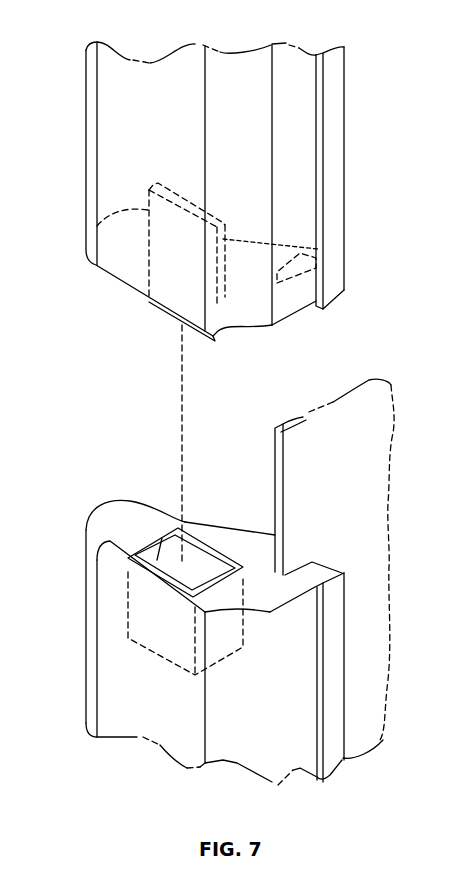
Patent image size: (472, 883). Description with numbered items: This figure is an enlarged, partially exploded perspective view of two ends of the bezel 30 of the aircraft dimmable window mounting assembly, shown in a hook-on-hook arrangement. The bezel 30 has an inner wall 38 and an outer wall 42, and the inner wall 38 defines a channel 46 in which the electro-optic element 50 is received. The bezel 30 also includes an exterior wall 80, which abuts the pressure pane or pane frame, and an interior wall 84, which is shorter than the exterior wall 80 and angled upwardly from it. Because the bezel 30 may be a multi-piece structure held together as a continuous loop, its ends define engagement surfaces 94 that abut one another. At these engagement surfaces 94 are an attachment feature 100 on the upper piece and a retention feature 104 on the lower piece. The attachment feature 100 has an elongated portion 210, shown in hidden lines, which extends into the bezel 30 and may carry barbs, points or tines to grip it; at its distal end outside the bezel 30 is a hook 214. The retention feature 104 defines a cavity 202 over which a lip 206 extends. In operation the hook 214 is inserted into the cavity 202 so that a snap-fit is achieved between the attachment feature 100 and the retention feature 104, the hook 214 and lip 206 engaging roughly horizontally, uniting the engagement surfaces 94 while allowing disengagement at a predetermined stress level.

The bezel 30 is at (84, 152).
The outer wall 42 is at (133, 105).
The exterior wall 80 is at (291, 123).
The engagement surfaces 94 is at (294, 313).
The inner wall 38 is at (242, 238).
The channel 46 is at (295, 255).
The interior wall 84 is at (80, 208).
The elongated portion 210 is at (148, 252).
The attachment feature 100 is at (160, 312).
The hook 214 is at (230, 328).
The electro-optic element 50 is at (371, 451).
The lip 206 is at (202, 573).
The retention feature 104 is at (120, 537).
The cavity 202 is at (218, 637).